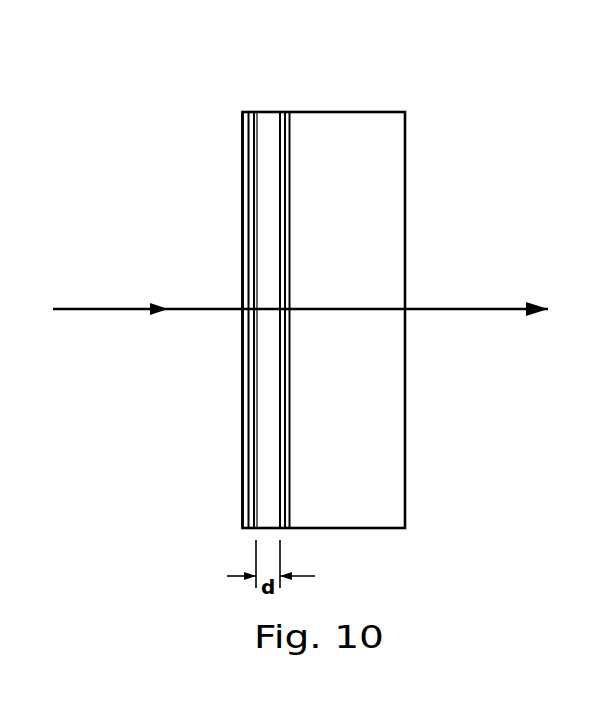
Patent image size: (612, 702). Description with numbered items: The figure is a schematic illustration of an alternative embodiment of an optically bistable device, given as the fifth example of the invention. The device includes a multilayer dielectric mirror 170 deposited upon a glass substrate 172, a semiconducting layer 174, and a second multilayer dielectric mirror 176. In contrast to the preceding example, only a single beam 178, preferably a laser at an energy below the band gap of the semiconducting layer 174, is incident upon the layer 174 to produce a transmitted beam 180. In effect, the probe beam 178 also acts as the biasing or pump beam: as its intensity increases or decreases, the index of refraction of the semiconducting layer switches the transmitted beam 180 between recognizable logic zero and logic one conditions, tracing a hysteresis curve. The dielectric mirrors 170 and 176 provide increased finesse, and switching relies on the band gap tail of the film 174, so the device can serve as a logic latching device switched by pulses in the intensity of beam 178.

The multilayer dielectric mirror 170 is at (287, 111).
The glass substrate 172 is at (377, 127).
The semiconducting layer 174 is at (265, 111).
The multilayer dielectric mirror 176 is at (243, 112).
The beam 178 is at (108, 309).
The transmitted beam 180 is at (475, 309).